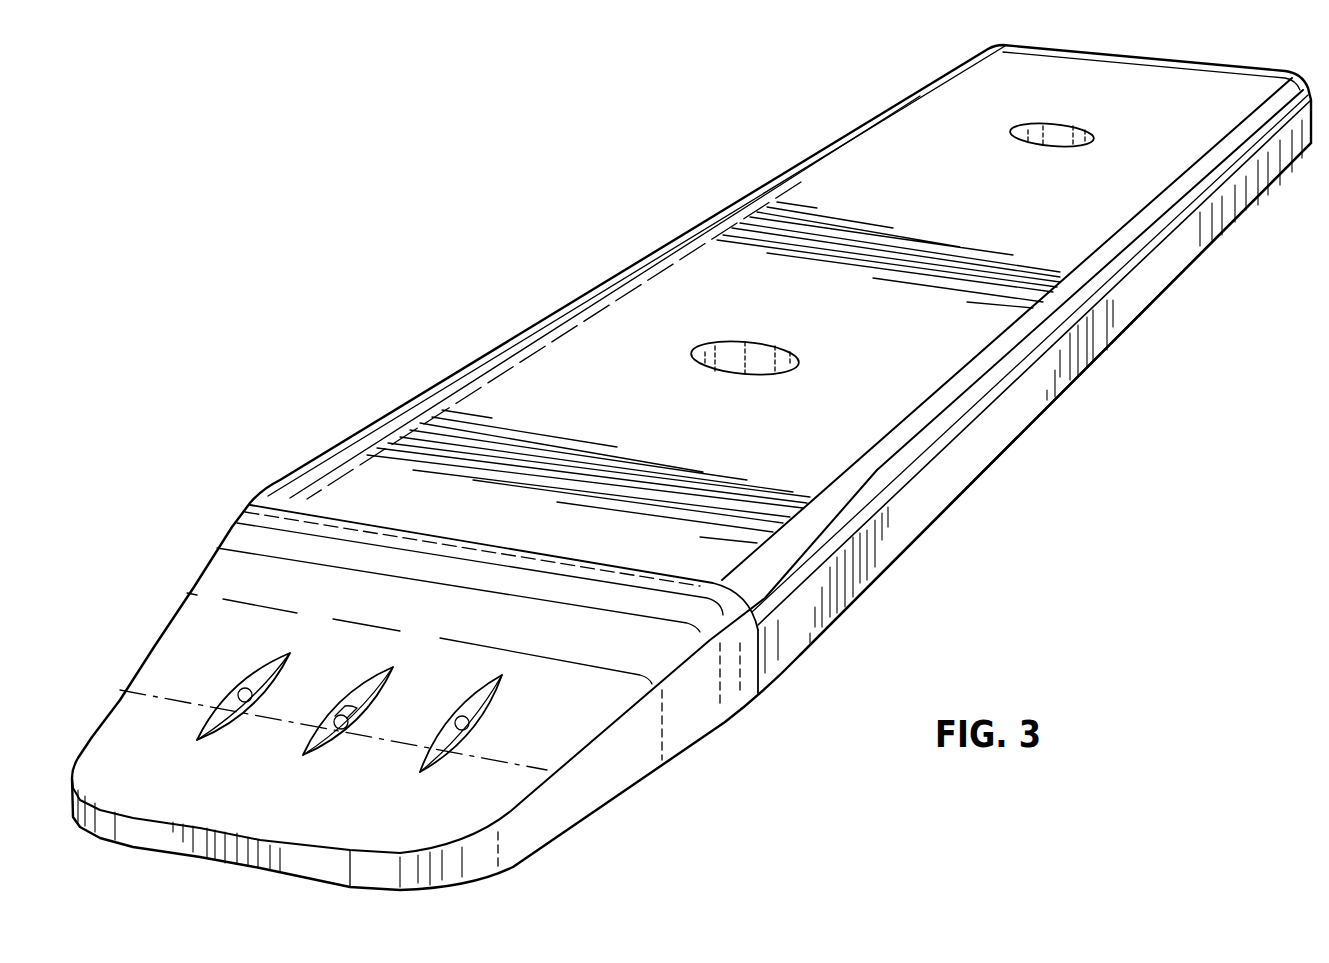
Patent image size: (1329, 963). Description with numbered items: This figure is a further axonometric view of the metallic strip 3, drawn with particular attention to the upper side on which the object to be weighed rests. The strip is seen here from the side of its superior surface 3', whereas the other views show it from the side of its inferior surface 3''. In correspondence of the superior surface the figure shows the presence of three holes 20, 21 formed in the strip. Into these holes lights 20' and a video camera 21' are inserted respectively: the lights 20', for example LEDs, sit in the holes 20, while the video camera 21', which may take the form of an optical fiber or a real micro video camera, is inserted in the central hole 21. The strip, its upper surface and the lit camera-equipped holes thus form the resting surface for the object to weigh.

The metallic strip 3 is at (691, 467).
The superior surface 3' is at (636, 272).
The inferior surface 3'' is at (1055, 399).
The holes 20 is at (349, 679).
The lights 20' is at (320, 671).
The central hole 21 is at (348, 677).
The video camera 21' is at (322, 677).